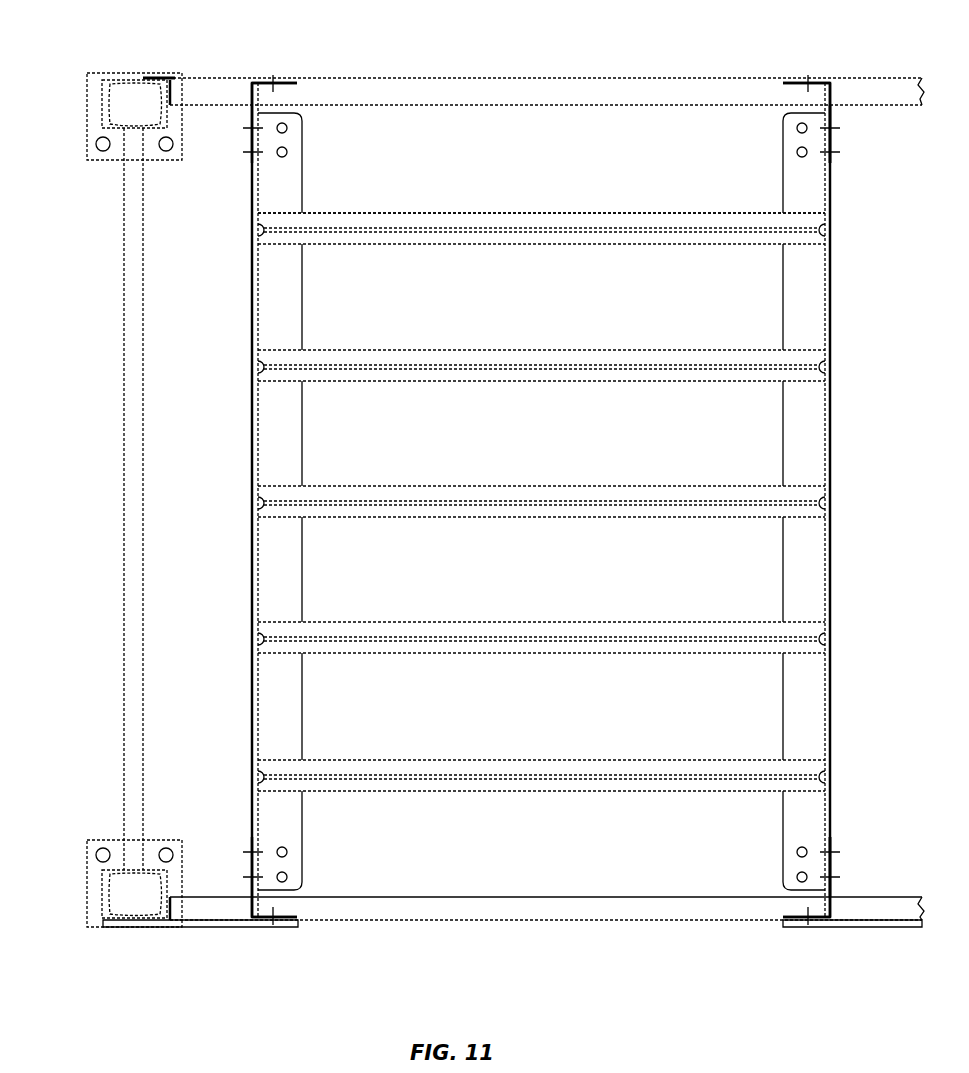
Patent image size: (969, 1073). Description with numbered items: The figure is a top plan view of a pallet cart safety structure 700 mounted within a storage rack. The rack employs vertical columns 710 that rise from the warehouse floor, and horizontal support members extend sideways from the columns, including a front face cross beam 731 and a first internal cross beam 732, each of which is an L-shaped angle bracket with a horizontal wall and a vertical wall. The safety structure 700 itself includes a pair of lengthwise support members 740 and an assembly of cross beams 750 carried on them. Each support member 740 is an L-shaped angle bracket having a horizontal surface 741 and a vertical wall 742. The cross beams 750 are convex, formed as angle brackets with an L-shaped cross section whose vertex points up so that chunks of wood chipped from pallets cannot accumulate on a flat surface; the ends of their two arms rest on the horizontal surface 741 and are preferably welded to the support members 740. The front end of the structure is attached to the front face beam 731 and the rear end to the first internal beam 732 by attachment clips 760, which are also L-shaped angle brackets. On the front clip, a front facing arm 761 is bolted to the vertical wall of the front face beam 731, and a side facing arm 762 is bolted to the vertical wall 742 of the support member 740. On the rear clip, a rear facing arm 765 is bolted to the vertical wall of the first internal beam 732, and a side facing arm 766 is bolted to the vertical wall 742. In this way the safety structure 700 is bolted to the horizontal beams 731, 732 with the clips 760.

The safety structure 700 is at (82, 318).
The vertical column 710 is at (135, 103).
The front face cross beam 731 is at (545, 905).
The first internal cross beam 732 is at (420, 92).
The lengthwise support member 740 is at (303, 300).
The horizontal surface 741 is at (300, 445).
The vertical wall 742 is at (255, 573).
The cross beam 750 is at (345, 215).
The attachment clip 760 is at (250, 118).
The front facing arm 761 is at (300, 910).
The side facing arm 762 is at (835, 860).
The rear facing arm 765 is at (285, 85).
The side facing arm 766 is at (835, 118).